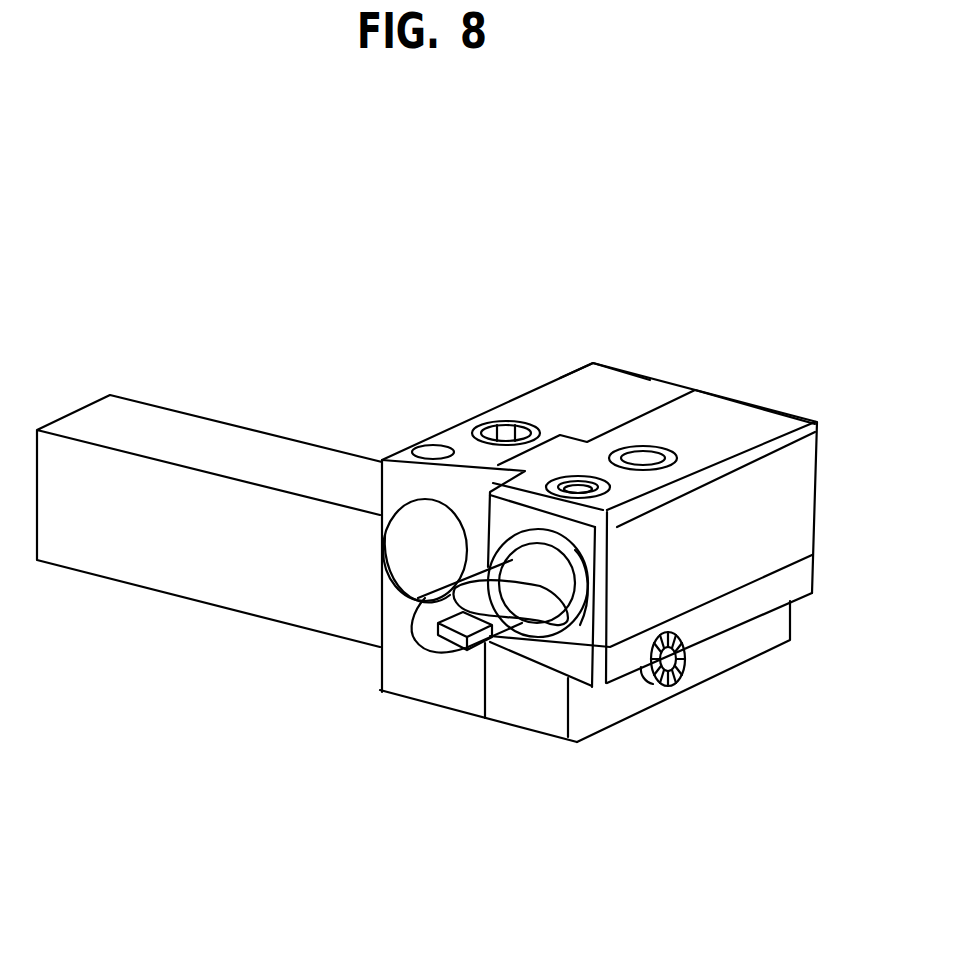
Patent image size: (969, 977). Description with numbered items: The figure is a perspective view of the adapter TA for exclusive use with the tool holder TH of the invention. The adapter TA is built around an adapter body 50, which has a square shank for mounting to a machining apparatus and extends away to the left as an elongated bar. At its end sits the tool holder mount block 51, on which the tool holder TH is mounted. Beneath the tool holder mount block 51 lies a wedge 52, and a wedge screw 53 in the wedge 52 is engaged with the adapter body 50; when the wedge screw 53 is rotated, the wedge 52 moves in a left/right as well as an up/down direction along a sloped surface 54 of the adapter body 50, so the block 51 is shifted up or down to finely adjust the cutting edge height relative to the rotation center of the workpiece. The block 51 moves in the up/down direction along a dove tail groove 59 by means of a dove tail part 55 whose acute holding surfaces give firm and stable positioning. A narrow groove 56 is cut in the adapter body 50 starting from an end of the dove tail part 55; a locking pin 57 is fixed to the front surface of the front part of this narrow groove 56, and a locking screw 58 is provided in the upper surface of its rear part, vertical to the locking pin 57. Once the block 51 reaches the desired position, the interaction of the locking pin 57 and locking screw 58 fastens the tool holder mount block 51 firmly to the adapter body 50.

The adapter body 50 is at (88, 558).
The tool holder mount block 51 is at (797, 520).
The wedge 52 is at (618, 660).
The wedge screw 53 is at (668, 660).
The sloped surface 54 is at (533, 677).
The dove tail part 55 is at (547, 457).
The narrow groove 56 is at (447, 442).
The locking pin 57 is at (413, 552).
The locking screw 58 is at (503, 432).
The dove tail groove 59 is at (587, 442).
The adapter TA is at (162, 373).
The tool holder TH is at (427, 655).